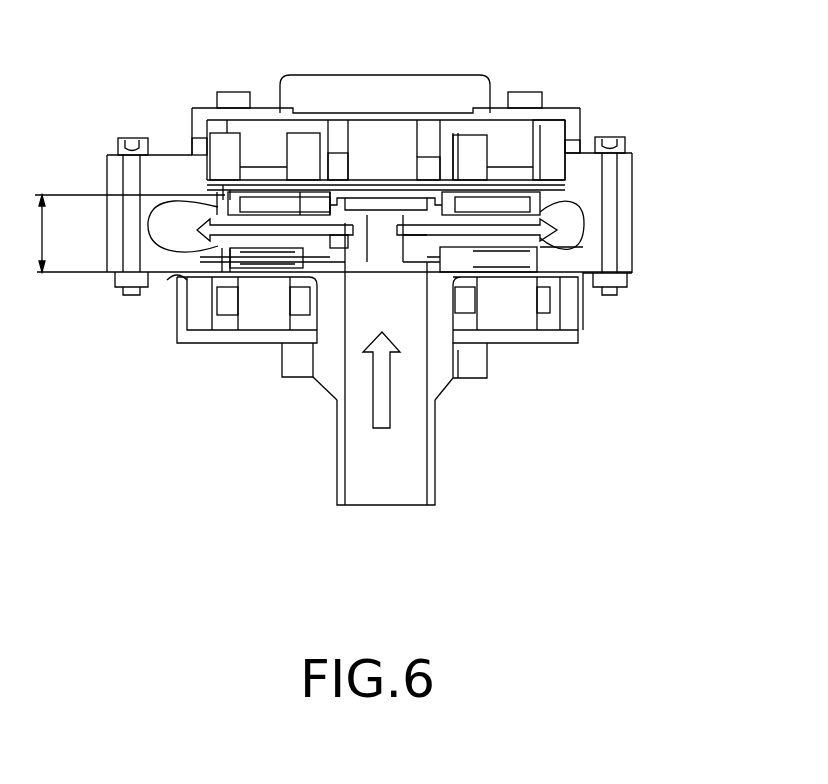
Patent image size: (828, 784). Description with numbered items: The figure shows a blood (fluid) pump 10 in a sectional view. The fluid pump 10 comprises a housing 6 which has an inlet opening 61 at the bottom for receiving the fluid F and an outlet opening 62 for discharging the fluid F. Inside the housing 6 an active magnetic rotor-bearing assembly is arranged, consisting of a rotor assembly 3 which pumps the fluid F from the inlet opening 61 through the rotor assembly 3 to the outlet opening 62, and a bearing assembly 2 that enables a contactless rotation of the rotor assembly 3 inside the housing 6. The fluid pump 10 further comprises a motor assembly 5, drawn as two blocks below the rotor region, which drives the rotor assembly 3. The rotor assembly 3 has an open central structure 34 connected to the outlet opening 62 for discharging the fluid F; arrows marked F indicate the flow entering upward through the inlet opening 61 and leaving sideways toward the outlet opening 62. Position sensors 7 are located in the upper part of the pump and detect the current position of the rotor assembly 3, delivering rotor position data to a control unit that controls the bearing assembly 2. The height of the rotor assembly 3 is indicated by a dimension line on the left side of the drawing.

The fluid pump 10 is at (184, 101).
The bearing assembly 2 is at (503, 147).
The position sensors 7 is at (340, 158).
The housing 6 is at (642, 188).
The outlet opening 62 is at (570, 233).
The rotor assembly 3 is at (37, 233).
The motor assembly 5 is at (258, 312).
The open central structure 34 is at (316, 376).
The inlet opening 61 is at (389, 490).
The fluid F is at (217, 205).